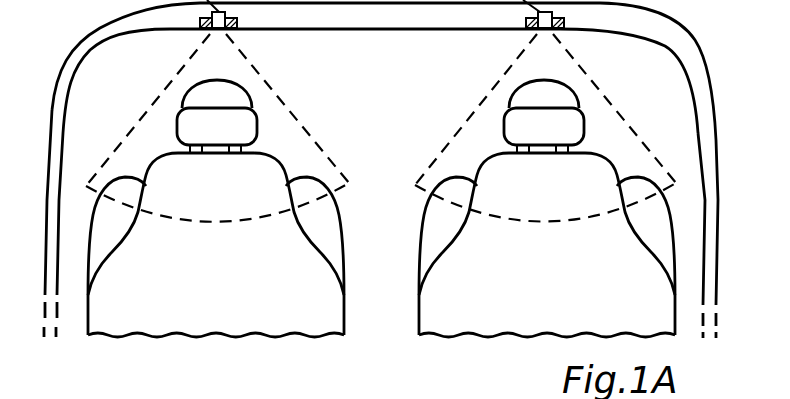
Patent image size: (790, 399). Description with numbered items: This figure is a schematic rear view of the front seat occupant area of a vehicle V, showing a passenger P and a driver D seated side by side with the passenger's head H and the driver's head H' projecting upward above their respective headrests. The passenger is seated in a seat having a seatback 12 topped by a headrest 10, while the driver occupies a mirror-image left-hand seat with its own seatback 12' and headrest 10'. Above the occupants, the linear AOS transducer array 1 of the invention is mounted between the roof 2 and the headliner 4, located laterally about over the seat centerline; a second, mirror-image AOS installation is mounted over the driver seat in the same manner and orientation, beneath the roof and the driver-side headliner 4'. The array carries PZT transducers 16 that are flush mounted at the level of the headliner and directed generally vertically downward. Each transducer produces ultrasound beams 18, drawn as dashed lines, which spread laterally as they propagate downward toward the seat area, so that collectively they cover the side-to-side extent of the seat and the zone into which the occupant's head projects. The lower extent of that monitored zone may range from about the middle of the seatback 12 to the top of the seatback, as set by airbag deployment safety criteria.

The linear AOS transducer array 1 is at (417, 391).
The roof 2 is at (138, 10).
The headliner 4 is at (539, 81).
The headliner 4' is at (222, 81).
The headrest 10 is at (544, 130).
The headrest 10' is at (217, 130).
The seatback 12 is at (547, 245).
The seatback 12' is at (216, 245).
The PZT transducers 16 is at (393, 396).
The ultrasound beams 18 is at (426, 164).
The driver D is at (173, 108).
The passenger P is at (587, 107).
The head H is at (544, 75).
The head H' is at (217, 75).
The vehicle V is at (688, 33).